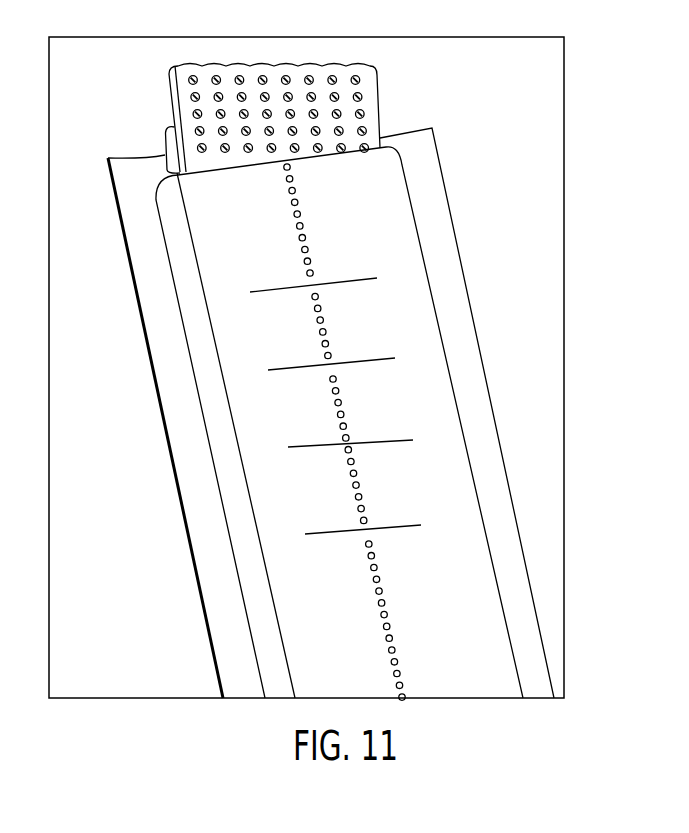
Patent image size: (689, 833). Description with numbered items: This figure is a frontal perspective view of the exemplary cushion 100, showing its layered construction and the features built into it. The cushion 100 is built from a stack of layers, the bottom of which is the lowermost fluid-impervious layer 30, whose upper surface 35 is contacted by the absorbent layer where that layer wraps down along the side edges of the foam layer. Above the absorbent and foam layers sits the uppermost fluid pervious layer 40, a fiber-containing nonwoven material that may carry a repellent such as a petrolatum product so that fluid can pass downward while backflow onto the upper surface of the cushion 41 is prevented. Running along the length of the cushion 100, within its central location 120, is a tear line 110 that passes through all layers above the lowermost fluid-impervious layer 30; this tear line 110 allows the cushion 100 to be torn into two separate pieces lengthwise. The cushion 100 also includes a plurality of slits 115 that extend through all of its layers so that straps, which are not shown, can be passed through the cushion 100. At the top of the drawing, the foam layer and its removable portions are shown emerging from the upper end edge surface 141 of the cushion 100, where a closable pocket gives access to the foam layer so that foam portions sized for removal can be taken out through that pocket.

The lowermost fluid-impervious layer 30 is at (205, 441).
The upper surface of the lowermost fluid-impervious layer 35 is at (470, 376).
The uppermost fluid pervious layer 40 is at (387, 219).
The cushion 41 is at (215, 235).
The cushion 100 is at (344, 403).
The tear line 110 is at (383, 602).
The slits 115 is at (352, 283).
The central location 120 is at (307, 193).
The upper end edge surface 141 is at (162, 171).